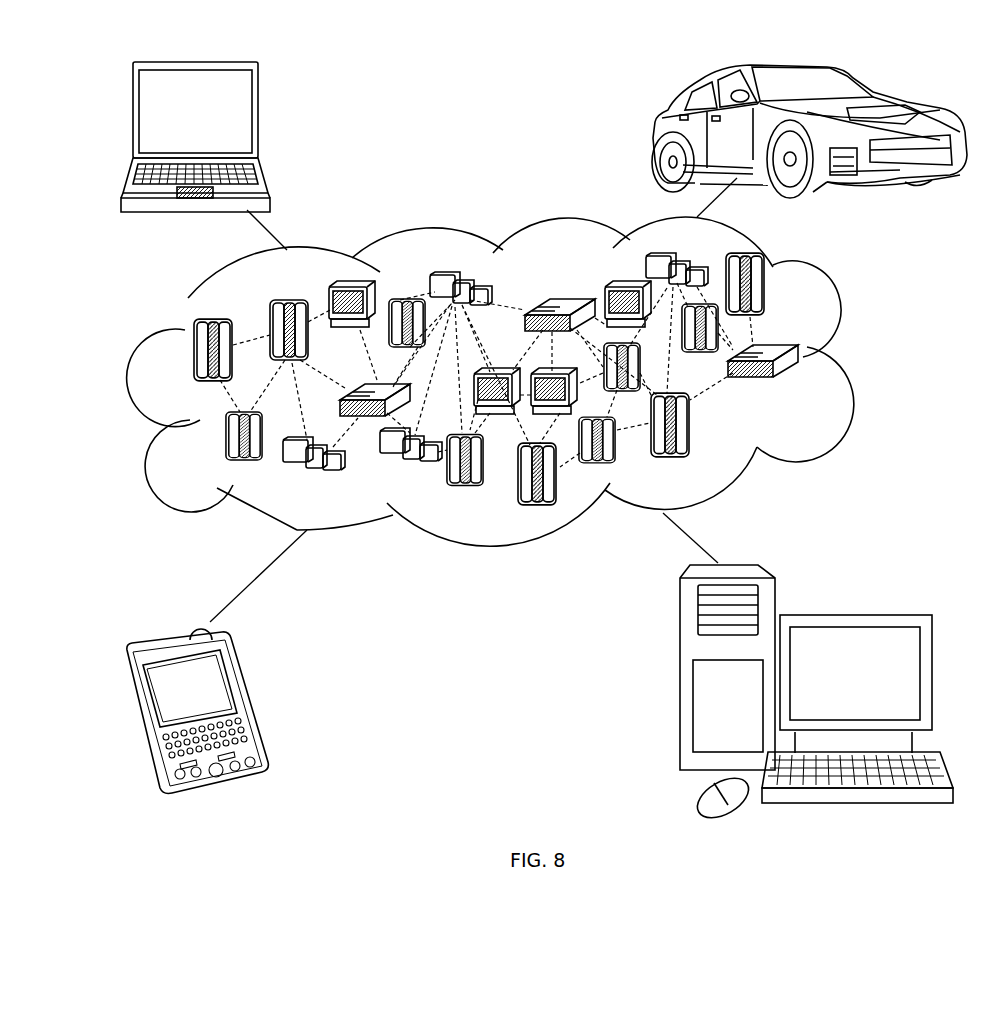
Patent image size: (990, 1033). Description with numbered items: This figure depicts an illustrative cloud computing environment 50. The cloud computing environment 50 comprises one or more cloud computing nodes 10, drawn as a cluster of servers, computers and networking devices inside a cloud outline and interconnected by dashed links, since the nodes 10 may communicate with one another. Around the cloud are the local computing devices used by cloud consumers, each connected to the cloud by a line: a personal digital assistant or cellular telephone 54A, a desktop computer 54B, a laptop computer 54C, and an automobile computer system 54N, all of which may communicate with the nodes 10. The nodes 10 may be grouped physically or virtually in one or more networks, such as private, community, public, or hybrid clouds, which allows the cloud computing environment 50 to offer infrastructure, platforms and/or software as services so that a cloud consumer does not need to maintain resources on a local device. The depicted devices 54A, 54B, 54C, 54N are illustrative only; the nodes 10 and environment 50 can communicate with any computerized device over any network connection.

The cloud computing nodes 10 is at (516, 381).
The cloud computing environment 50 is at (852, 357).
The personal digital assistant (PDA) or cellular telephone 54A is at (245, 701).
The desktop computer 54B is at (852, 615).
The laptop computer 54C is at (262, 114).
The automobile computer system 54N is at (652, 135).